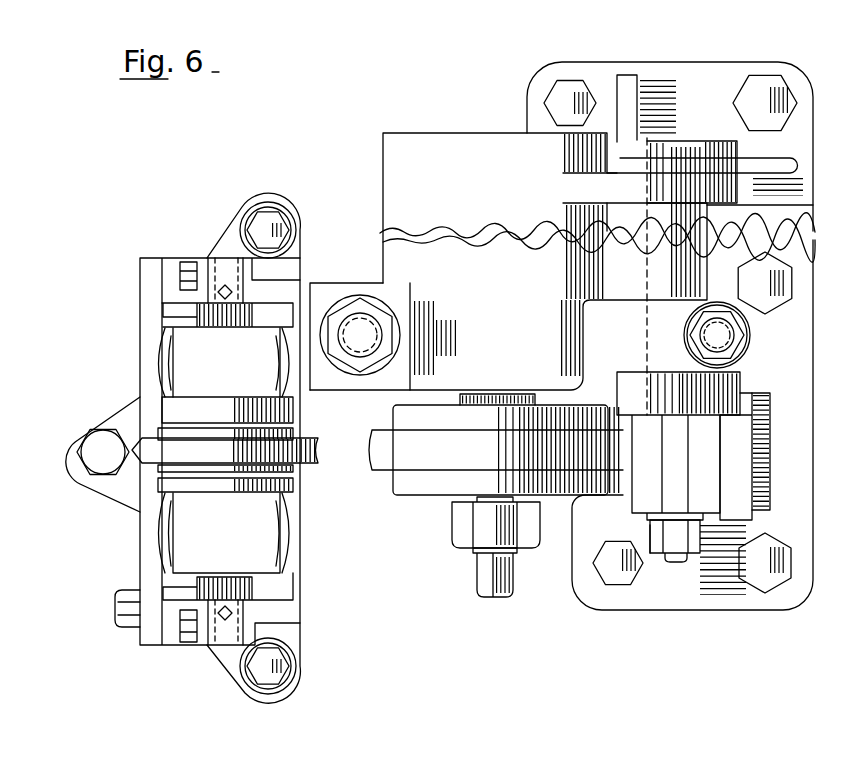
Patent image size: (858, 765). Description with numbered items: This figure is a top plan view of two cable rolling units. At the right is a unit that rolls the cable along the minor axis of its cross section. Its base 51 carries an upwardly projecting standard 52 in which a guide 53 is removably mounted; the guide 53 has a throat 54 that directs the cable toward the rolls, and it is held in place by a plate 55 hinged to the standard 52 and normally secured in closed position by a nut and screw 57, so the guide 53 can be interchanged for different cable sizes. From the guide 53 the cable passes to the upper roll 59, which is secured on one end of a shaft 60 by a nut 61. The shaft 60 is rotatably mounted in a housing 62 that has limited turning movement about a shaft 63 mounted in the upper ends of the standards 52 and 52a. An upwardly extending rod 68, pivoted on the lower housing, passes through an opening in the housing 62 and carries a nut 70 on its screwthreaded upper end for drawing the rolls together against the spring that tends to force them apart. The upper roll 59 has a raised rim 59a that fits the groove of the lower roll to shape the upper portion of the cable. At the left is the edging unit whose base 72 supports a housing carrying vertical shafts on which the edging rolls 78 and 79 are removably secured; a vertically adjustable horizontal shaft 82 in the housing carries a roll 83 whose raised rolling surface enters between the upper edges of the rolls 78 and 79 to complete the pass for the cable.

The base 51 is at (705, 611).
The standard 52 is at (750, 371).
The standard 52a is at (716, 142).
The guide 53 is at (768, 393).
The throat 54 is at (757, 425).
The plate 55 is at (755, 517).
The nut and screw 57 is at (650, 530).
The upper roll 59 is at (393, 480).
The raised rim 59a is at (373, 444).
The shaft 60 is at (478, 556).
The nut 61 is at (455, 532).
The housing 62 is at (383, 208).
The shaft 63 is at (660, 416).
The rod 68 is at (383, 330).
The nut 70 is at (385, 307).
The base 72 is at (302, 644).
The edging roll 78 is at (158, 538).
The edging roll 79 is at (160, 369).
The horizontal shaft 82 is at (192, 580).
The roll 83 is at (150, 464).